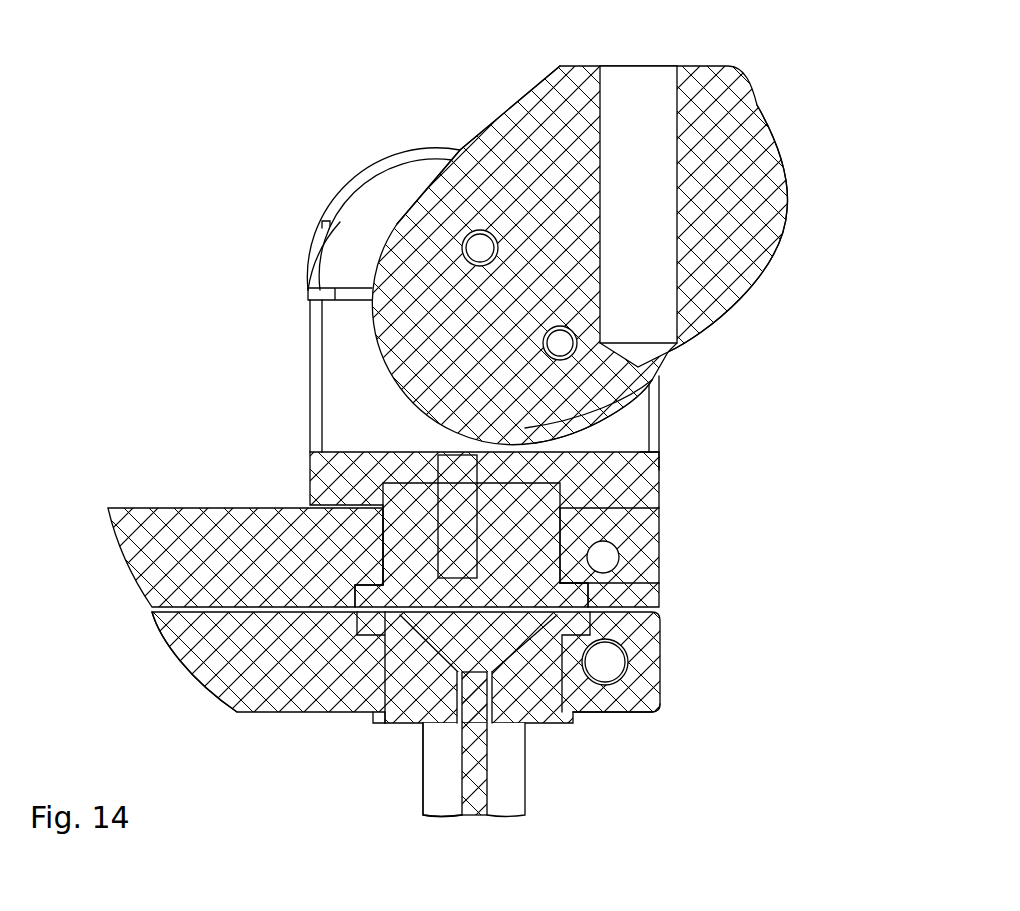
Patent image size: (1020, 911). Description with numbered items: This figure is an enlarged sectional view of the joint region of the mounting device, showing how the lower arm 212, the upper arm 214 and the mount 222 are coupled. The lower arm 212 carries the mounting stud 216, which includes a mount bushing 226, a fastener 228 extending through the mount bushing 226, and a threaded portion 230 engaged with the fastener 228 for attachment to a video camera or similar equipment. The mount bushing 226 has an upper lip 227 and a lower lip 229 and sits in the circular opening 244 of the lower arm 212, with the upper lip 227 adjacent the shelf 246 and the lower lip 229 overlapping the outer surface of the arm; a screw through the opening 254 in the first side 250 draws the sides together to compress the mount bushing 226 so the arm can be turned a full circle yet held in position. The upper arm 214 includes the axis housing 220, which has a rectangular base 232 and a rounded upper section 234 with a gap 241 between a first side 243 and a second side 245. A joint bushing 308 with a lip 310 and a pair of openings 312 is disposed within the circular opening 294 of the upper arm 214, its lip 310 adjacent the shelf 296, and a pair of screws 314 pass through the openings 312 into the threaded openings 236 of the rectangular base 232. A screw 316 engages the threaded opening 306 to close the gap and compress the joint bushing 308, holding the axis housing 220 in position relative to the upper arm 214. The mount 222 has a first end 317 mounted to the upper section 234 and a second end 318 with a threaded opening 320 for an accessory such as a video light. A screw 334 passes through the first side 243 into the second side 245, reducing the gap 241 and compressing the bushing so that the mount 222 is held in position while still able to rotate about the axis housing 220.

The lower arm 212 is at (180, 656).
The upper arm 214 is at (130, 557).
The mounting stud 216 is at (525, 778).
The axis housing 220 is at (403, 158).
The mount 222 is at (748, 100).
The mount bushing 226 is at (397, 727).
The upper lip 227 is at (590, 622).
The fastener 228 is at (475, 815).
The lower lip 229 is at (373, 720).
The threaded portion 230 is at (425, 800).
The rectangular base 232 is at (660, 503).
The rounded upper section 234 is at (446, 150).
The threaded openings 236 is at (438, 467).
The gap 241 is at (308, 292).
The first side 243 is at (312, 266).
The circular opening 244 is at (210, 690).
The second side 245 is at (310, 378).
The shelf 246 is at (357, 637).
The first side 250 is at (658, 710).
The opening 254 is at (620, 665).
The circular opening 294 is at (660, 510).
The shelf 296 is at (597, 583).
The threaded opening 306 is at (620, 557).
The joint bushing 308 is at (555, 490).
The lip 310 is at (357, 587).
The openings 312 is at (652, 420).
The screws 314 is at (661, 452).
The screw 316 is at (640, 538).
The first end 317 is at (388, 223).
The second end 318 is at (787, 187).
The threaded opening 320 is at (675, 93).
The screw 334 is at (320, 232).